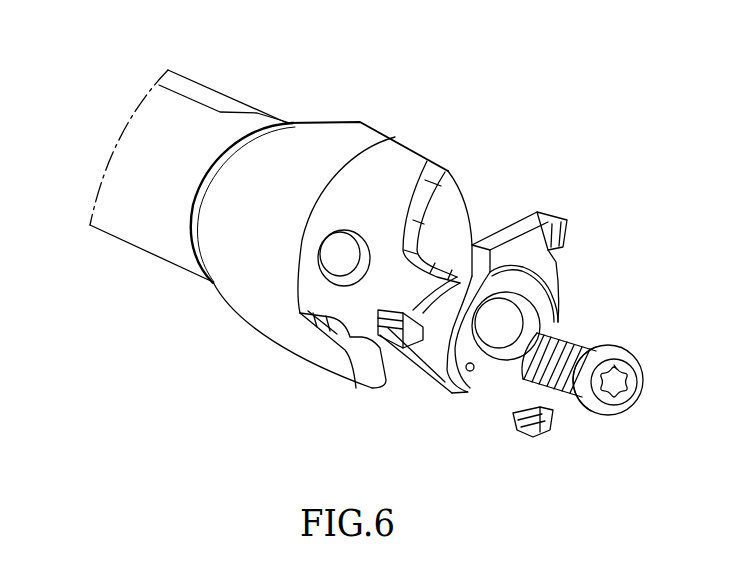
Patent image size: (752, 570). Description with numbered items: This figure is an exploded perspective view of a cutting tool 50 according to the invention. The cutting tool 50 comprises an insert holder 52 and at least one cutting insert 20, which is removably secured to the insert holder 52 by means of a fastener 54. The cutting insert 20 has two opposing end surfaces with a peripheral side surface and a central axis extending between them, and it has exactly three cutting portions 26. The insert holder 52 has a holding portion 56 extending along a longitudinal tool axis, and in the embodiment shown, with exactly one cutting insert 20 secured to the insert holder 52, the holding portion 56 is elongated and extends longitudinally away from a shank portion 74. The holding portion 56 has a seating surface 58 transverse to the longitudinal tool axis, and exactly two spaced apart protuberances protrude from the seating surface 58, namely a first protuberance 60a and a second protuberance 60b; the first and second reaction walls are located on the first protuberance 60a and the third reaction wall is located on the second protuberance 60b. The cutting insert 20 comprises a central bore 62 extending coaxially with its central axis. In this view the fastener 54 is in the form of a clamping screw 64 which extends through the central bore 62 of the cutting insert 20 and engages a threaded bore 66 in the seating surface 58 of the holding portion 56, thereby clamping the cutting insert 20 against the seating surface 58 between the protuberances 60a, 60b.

The cutting tool 50 is at (371, 112).
The insert holder 52 is at (284, 148).
The fastener 54 is at (605, 407).
The holding portion 56 is at (247, 272).
The seating surface 58 is at (385, 180).
The first protuberance 60a is at (347, 358).
The second protuberance 60b is at (452, 233).
The central bore 62 is at (484, 350).
The clamping screw 64 is at (640, 385).
The threaded bore 66 is at (326, 278).
The shank portion 74 is at (129, 210).
The cutting insert 20 is at (541, 236).
The cutting portions 26 is at (408, 340).